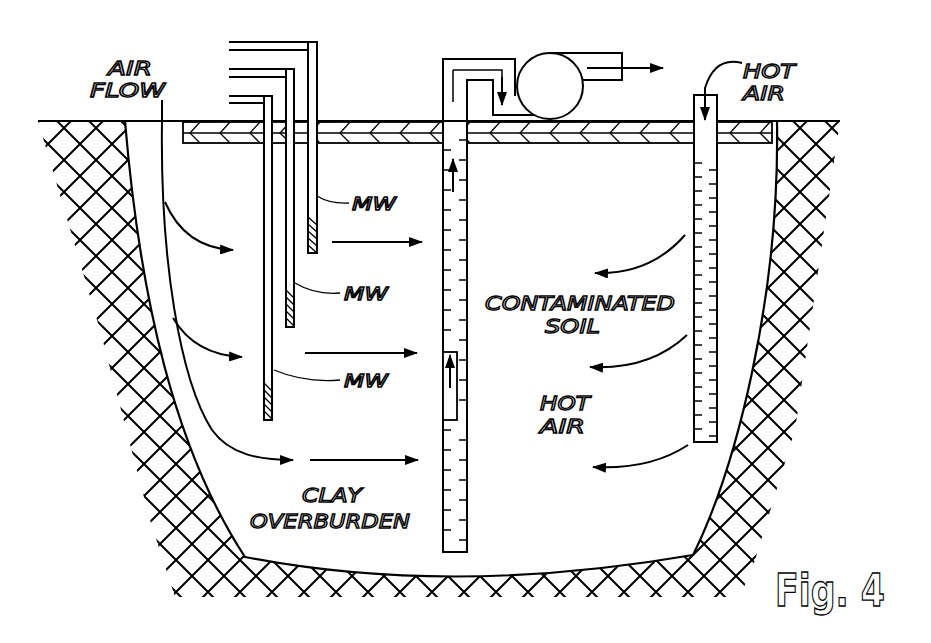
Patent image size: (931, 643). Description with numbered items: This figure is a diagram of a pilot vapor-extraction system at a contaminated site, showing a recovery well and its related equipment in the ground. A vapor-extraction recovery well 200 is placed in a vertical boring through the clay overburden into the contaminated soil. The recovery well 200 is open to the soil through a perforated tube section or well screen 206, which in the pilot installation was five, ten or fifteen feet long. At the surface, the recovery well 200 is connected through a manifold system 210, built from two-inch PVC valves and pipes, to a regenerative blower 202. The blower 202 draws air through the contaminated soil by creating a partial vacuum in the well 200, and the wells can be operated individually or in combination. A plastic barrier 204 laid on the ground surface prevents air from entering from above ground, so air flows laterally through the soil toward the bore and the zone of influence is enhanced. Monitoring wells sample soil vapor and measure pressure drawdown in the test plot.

The vapor-extraction recovery well 200 is at (459, 292).
The regenerative blower 202 is at (558, 52).
The plastic barrier 204 is at (327, 122).
The well screen 206 is at (467, 455).
The manifold system 210 is at (457, 58).